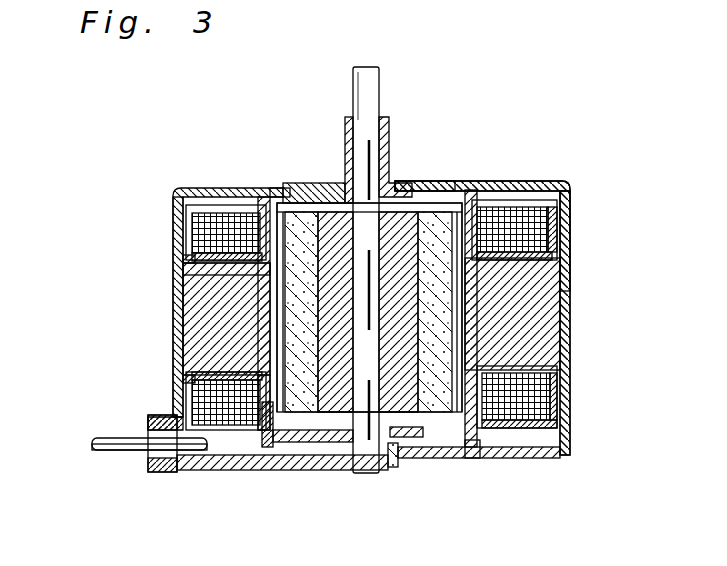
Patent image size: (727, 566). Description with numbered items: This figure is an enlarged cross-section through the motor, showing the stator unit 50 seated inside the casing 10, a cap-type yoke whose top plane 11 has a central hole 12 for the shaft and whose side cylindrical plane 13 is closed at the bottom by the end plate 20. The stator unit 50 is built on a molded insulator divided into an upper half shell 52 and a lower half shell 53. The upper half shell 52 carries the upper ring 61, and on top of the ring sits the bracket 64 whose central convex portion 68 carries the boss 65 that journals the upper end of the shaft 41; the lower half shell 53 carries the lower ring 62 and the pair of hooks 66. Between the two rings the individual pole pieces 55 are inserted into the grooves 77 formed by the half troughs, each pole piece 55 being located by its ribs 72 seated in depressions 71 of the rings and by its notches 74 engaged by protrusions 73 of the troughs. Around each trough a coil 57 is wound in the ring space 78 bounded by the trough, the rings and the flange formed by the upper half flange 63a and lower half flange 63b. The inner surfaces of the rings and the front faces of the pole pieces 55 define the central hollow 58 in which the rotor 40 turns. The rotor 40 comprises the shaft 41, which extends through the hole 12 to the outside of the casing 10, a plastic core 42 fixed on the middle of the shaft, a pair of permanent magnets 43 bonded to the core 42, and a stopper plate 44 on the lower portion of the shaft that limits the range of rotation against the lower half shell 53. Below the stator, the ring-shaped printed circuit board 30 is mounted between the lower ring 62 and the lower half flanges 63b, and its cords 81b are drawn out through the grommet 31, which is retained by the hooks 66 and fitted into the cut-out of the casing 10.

The casing 10 is at (176, 190).
The top plane 11 is at (580, 179).
The hole 12 is at (416, 200).
The side cylindrical plane 13 is at (568, 348).
The end plate 20 is at (430, 458).
The printed circuit board 30 is at (220, 465).
The grommet 31 is at (92, 444).
The rotor 40 is at (404, 235).
The shaft 41 is at (372, 80).
The core 42 is at (328, 318).
The permanent magnets 43 is at (437, 317).
The stopper plate 44 is at (395, 468).
The stator unit 50 is at (537, 287).
The upper half shell 52 is at (186, 257).
The lower half shell 53 is at (213, 382).
The pole piece 55 is at (213, 307).
The coil 57 is at (180, 208).
The hollow 58 is at (275, 192).
The upper ring 61 is at (537, 181).
The lower ring 62 is at (478, 458).
The upper half flange 63a is at (553, 227).
The lower half flange 63b is at (557, 403).
The bracket 64 is at (300, 191).
The boss 65 is at (392, 130).
The hooks 66 is at (150, 463).
The convex portion 68 is at (407, 182).
The depressions 71 is at (207, 233).
The rib 72 is at (257, 245).
The protrusion 73 is at (196, 267).
The notch 74 is at (232, 280).
The groove 77 is at (253, 373).
The ring space 78 is at (205, 395).
The cords 81b is at (108, 450).